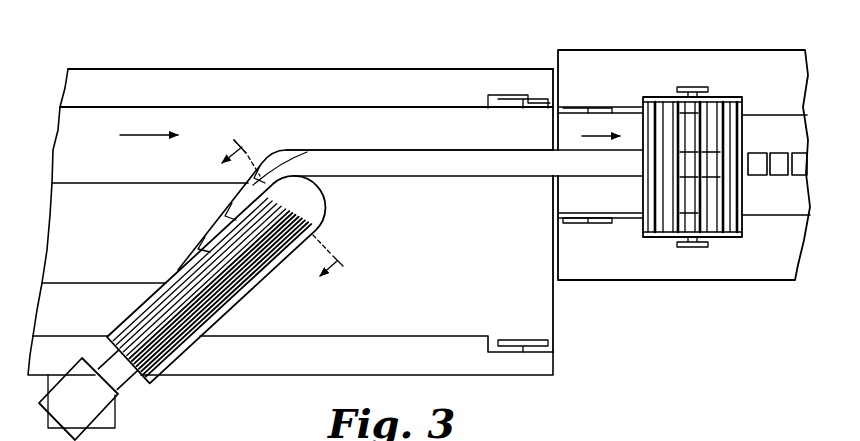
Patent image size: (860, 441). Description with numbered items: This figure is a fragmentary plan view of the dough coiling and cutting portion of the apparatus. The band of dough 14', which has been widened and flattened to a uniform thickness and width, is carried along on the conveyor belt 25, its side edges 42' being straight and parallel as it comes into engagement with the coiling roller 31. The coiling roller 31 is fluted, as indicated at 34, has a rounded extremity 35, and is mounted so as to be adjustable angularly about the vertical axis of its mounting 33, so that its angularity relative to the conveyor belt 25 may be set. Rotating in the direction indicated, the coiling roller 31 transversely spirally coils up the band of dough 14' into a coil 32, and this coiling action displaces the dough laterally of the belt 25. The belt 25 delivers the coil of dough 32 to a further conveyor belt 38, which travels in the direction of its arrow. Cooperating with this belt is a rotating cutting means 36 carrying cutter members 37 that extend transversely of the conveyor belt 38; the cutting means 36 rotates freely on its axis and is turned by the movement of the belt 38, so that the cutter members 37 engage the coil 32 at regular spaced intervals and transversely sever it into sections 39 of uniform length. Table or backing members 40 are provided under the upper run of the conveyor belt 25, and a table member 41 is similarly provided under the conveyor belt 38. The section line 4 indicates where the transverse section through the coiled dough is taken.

The section line 4- 4 is at (290, 202).
The band of dough 14' is at (150, 169).
The conveyor belt 25 is at (540, 312).
The coiling roller 31 is at (280, 267).
The coil 32 is at (437, 168).
The mounting 33 is at (108, 400).
The fluting 34 is at (187, 340).
The rounded extremity 35 is at (320, 187).
The rotating cutting means 36 is at (722, 97).
The cutter members 37 is at (643, 128).
The conveyor belt 38 is at (633, 210).
The sections 39 is at (800, 153).
The table or backing members 40 is at (462, 367).
The table member 41 is at (722, 270).
The side edges 42' is at (112, 232).